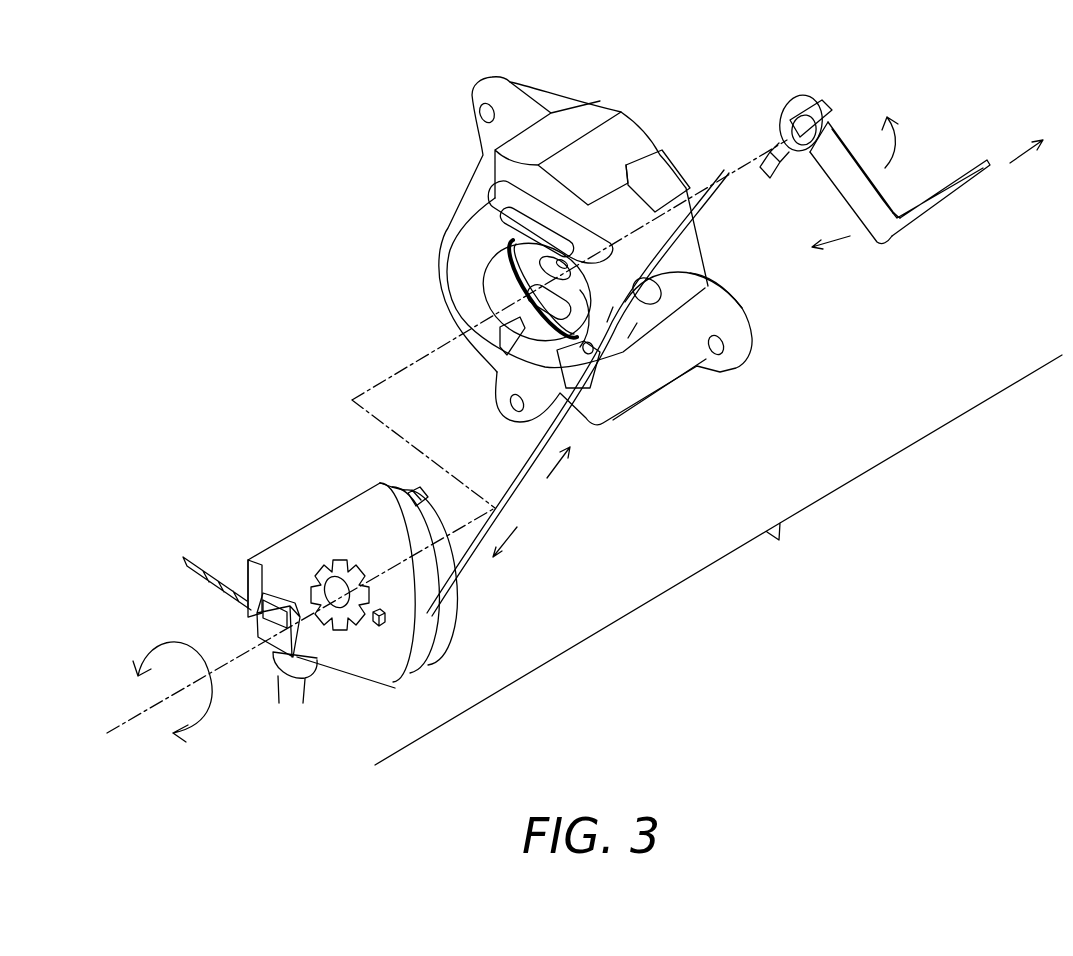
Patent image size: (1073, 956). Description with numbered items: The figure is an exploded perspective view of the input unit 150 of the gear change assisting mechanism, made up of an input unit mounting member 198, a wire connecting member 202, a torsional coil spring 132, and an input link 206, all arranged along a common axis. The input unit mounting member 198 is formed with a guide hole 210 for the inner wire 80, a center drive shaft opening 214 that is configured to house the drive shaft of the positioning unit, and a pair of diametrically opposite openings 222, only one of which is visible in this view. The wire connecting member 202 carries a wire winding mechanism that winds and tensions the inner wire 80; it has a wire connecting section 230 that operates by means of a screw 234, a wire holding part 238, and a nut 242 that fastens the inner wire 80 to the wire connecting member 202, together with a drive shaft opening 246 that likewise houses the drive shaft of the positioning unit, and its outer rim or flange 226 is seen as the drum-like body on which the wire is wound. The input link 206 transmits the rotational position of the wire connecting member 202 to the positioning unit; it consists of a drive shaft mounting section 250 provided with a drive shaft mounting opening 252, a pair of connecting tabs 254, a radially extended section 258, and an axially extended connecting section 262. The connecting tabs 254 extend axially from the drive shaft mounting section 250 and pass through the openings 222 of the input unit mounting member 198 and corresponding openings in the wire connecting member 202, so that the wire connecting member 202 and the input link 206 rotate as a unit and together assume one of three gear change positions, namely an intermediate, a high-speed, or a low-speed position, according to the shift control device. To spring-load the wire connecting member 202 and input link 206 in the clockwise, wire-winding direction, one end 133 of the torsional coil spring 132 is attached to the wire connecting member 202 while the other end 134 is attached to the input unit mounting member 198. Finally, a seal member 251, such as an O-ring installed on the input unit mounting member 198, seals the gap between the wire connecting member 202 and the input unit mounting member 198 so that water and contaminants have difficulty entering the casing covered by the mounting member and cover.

The inner wire 80 is at (472, 570).
The torsional coil spring 132 is at (446, 497).
The one end of the torsional coil spring 133 is at (379, 627).
The other end of the torsional coil spring 134 is at (410, 492).
The input unit 150 is at (718, 560).
The input unit mounting member 198 is at (517, 97).
The wire connecting member 202 is at (317, 540).
The input link 206 is at (918, 237).
The guide hole 210 is at (748, 304).
The center drive shaft opening 214 is at (537, 238).
The openings 222 is at (553, 275).
The flange 226 is at (437, 625).
The wire connecting section 230 is at (303, 688).
The screw 234 is at (283, 667).
The wire holding part 238 is at (262, 628).
The nut 242 is at (262, 598).
The drive shaft opening 246 is at (343, 615).
The drive shaft mounting section 250 is at (780, 106).
The seal member 251 is at (528, 282).
The drive shaft mounting opening 252 is at (817, 162).
The connecting tabs 254 is at (830, 102).
The radially extended section 258 is at (890, 185).
The axially extended connecting section 262 is at (950, 202).